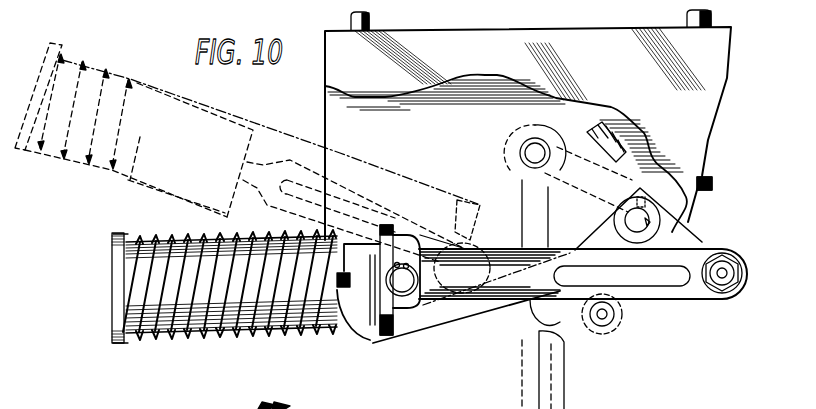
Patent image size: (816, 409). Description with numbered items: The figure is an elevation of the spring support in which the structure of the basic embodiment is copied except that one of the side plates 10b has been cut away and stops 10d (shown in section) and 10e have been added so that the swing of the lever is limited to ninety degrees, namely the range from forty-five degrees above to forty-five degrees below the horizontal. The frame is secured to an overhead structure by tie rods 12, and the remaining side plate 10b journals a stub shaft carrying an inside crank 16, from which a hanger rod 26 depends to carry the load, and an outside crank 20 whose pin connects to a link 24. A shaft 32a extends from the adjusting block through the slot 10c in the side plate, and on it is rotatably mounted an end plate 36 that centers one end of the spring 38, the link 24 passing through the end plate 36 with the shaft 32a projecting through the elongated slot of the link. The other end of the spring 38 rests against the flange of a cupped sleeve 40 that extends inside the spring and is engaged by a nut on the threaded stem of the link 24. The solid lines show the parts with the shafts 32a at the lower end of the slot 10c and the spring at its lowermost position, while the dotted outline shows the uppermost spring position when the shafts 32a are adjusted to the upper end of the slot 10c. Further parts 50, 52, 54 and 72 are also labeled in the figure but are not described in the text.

The side plate 10b is at (717, 78).
The slot 10c is at (470, 230).
The stop 10d is at (624, 133).
The stop 10e is at (707, 195).
The tie rod 12 is at (349, 22).
The crank 16 is at (594, 237).
The outside crank 20 is at (699, 242).
The link 24 is at (665, 297).
The hanger rod 26 is at (554, 389).
The shaft 32a is at (413, 295).
The end plate 36 is at (378, 340).
The spring 38 is at (182, 337).
The cupped sleeve 40 is at (162, 246).
The member 50 is at (298, 405).
The member 52 is at (251, 400).
The member 54 is at (265, 404).
The member 72 is at (208, 408).